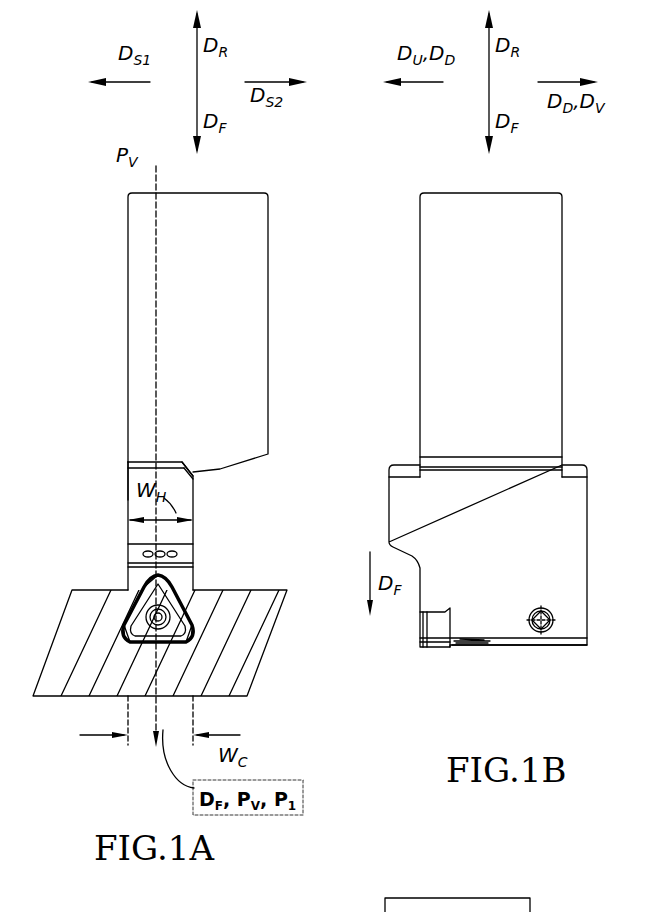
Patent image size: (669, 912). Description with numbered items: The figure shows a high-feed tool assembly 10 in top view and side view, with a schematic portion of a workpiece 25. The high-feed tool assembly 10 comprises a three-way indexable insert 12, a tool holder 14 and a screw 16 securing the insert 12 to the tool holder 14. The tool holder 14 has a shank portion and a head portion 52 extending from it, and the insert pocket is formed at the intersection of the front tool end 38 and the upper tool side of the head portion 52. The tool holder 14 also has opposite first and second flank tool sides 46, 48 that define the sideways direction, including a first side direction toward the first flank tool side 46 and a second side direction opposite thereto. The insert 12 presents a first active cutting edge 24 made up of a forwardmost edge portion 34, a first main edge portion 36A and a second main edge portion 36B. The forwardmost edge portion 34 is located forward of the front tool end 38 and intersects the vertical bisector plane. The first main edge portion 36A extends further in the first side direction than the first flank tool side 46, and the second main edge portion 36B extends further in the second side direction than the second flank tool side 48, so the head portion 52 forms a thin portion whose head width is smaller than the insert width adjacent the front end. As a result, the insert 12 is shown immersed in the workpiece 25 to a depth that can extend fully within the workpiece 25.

In FIG. 1A, the high-feed tool assembly 10 is at (107, 190).
In FIG. 1B, the high-feed tool assembly 10 is at (582, 196).
In FIG. 1A, the tool holder 14 is at (282, 304).
In FIG. 1A, the first flank tool side 46 is at (127, 480).
In FIG. 1A, the head portion 52 is at (203, 493).
In FIG. 1A, the second flank tool side 48 is at (194, 540).
In FIG. 1A, the screw 16 is at (178, 590).
In FIG. 1A, the three-way indexable insert 12 is at (132, 584).
In FIG. 1A, the workpiece 25 is at (222, 637).
In FIG. 1A, the first main edge portion 36A is at (131, 662).
In FIG. 1A, the second main edge portion 36B is at (197, 657).
In FIG. 1A, the forwardmost edge portion 34 is at (149, 662).
In FIG. 1B, the first active cutting edge 24 is at (420, 647).
In FIG. 1B, the front tool end 38 is at (474, 660).